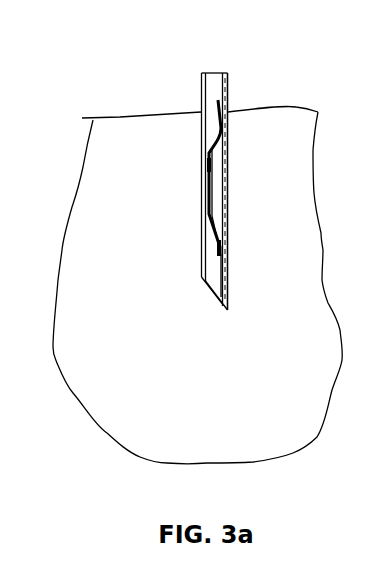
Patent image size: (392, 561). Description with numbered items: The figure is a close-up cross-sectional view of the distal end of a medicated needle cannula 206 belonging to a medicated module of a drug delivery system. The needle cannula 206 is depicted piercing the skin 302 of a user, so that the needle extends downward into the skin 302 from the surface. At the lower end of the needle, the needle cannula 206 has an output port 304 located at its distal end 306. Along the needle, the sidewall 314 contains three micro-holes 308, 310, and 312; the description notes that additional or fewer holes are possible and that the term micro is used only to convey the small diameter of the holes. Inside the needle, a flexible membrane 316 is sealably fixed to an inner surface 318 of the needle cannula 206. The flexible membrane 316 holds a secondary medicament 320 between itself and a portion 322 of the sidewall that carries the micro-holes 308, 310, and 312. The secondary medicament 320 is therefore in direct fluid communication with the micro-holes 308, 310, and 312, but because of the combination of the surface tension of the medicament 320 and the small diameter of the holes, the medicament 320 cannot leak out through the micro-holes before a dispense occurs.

The skin 302 is at (110, 108).
The needle cannula 206 is at (191, 87).
The sidewall 314 is at (238, 93).
The flexible membrane 316 is at (200, 199).
The inner surface 318 is at (218, 100).
The secondary medicament 320 is at (201, 164).
The portion of the sidewall 322 is at (246, 236).
The micro-hole 308 is at (233, 155).
The micro-hole 310 is at (243, 188).
The micro-hole 312 is at (243, 219).
The output port 304 is at (202, 300).
The distal end 306 is at (232, 319).